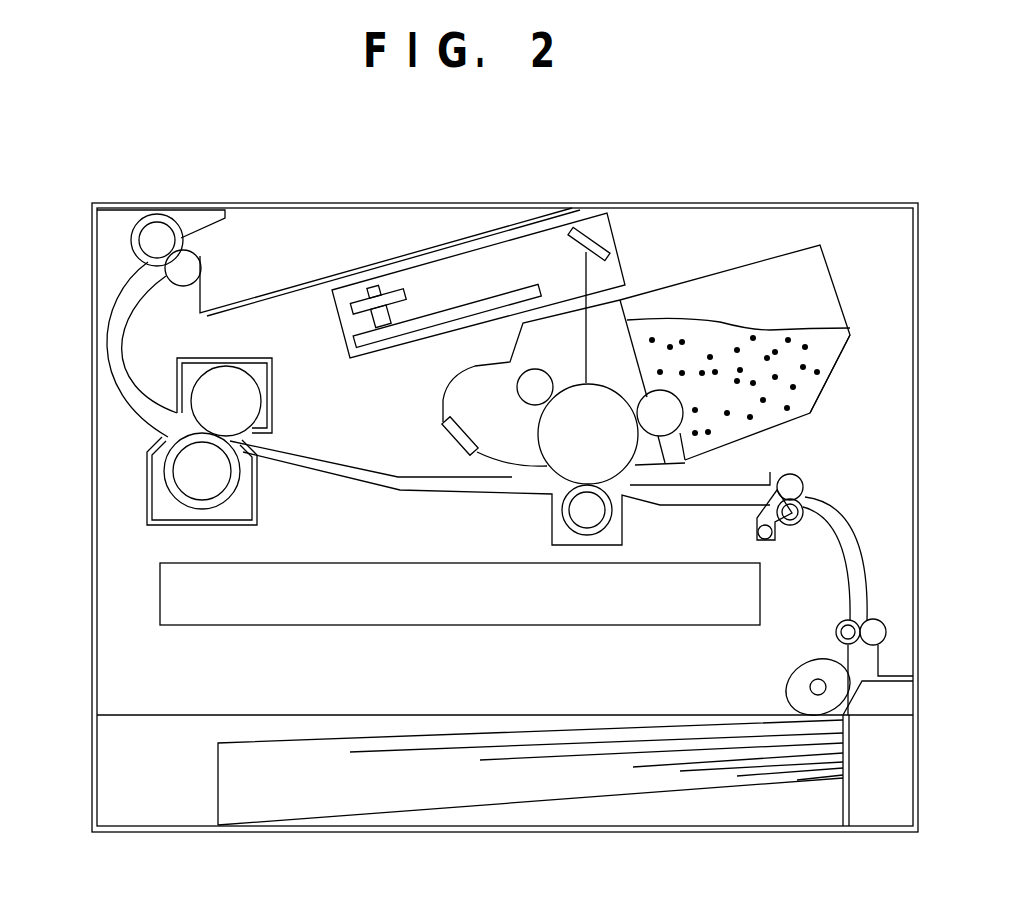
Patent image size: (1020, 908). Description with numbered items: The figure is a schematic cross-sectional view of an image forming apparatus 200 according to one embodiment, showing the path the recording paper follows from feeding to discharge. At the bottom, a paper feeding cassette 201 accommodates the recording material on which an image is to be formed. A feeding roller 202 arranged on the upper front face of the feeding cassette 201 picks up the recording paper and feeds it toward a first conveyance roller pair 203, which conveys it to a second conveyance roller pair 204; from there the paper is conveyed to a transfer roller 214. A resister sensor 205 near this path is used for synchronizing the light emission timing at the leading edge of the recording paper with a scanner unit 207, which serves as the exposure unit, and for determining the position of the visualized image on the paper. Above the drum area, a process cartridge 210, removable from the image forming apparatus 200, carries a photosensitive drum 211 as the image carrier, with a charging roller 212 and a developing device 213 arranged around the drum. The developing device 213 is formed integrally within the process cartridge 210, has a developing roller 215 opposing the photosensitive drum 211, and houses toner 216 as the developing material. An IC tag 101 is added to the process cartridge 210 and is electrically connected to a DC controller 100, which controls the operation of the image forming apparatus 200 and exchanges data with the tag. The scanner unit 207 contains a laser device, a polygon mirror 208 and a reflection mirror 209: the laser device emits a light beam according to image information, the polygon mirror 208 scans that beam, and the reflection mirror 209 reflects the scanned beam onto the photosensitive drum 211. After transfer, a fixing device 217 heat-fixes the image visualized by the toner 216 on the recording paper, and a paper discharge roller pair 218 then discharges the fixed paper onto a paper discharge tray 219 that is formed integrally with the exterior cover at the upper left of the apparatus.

The DC controller 100 is at (389, 563).
The IC tag 101 is at (445, 430).
The image forming apparatus 200 is at (812, 203).
The paper feeding cassette 201 is at (237, 815).
The feeding roller 202 is at (787, 687).
The first conveyance roller pair 203 is at (833, 630).
The second conveyance roller pair 204 is at (800, 470).
The resister sensor 205 is at (757, 532).
The scanner unit 207 is at (608, 215).
The polygon mirror 208 is at (345, 314).
The reflection mirror 209 is at (610, 252).
The process cartridge 210 is at (828, 260).
The photosensitive drum 211 is at (558, 380).
The charging roller 212 is at (520, 393).
The developing device 213 is at (827, 383).
The transfer roller 214 is at (562, 517).
The developing roller 215 is at (683, 462).
The toner 216 is at (778, 328).
The fixing device 217 is at (257, 497).
The paper discharge roller pair 218 is at (131, 249).
The paper discharge tray 219 is at (284, 288).